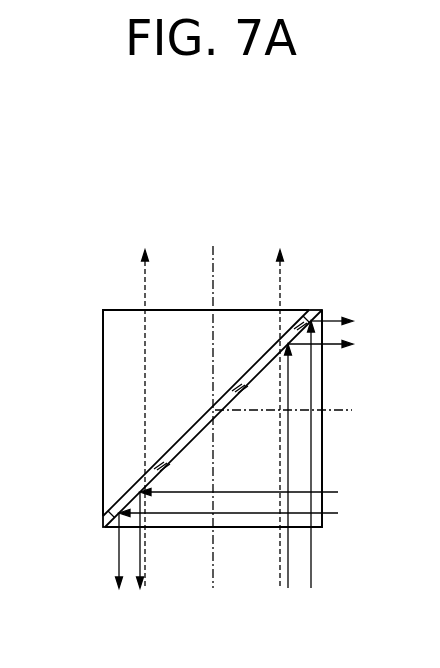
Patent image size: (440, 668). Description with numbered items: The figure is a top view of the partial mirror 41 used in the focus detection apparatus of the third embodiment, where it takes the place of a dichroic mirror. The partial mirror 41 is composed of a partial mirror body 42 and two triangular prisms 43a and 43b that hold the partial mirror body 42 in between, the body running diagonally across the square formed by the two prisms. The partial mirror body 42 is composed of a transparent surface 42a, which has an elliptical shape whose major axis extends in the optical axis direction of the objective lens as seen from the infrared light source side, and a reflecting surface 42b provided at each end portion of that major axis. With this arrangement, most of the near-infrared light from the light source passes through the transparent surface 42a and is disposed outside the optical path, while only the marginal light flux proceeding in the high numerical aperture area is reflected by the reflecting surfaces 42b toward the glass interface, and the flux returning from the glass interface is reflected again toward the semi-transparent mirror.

The partial mirror 41 is at (120, 263).
The partial mirror body 42 is at (190, 385).
The transparent surface 42a is at (197, 428).
The reflecting surface 42b is at (120, 497).
The triangular prism 43a is at (125, 445).
The triangular prism 43b is at (313, 520).